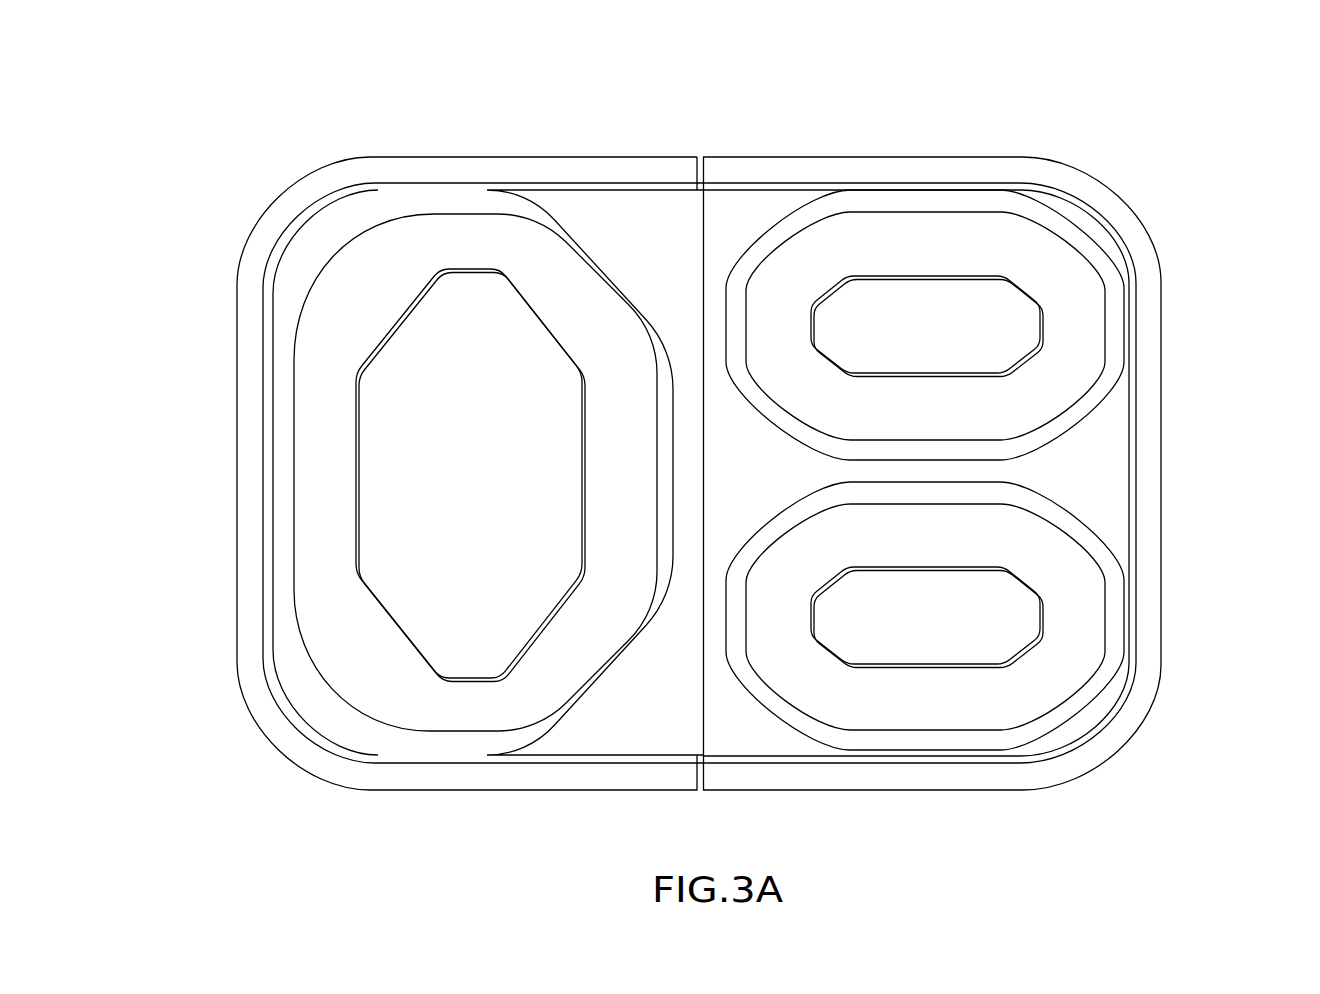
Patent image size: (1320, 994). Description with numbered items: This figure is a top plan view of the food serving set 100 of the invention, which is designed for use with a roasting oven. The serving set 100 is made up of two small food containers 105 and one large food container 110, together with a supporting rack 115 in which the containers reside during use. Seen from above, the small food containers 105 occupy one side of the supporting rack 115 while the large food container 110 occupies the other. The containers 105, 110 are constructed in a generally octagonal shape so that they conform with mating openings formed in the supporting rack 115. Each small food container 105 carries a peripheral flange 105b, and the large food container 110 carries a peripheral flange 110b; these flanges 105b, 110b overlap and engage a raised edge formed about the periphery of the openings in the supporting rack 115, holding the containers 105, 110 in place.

The food serving set 100 is at (928, 118).
The small food container 105 is at (1038, 534).
The peripheral flange 105b is at (1053, 220).
The large food container 110 is at (369, 662).
The peripheral flange 110b is at (462, 743).
The supporting rack 115 is at (1123, 727).